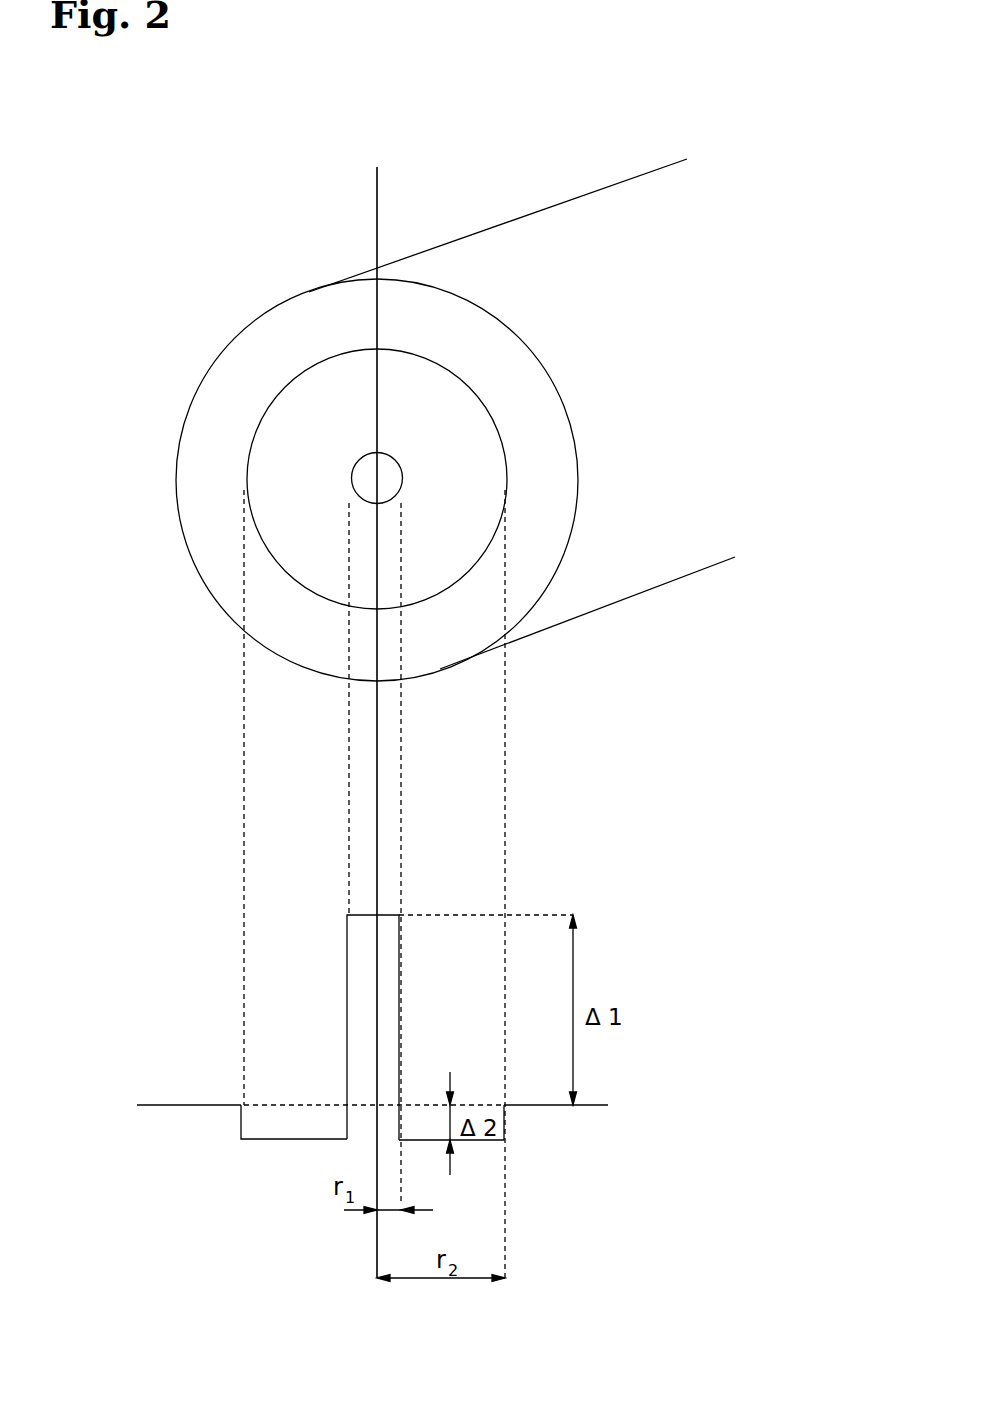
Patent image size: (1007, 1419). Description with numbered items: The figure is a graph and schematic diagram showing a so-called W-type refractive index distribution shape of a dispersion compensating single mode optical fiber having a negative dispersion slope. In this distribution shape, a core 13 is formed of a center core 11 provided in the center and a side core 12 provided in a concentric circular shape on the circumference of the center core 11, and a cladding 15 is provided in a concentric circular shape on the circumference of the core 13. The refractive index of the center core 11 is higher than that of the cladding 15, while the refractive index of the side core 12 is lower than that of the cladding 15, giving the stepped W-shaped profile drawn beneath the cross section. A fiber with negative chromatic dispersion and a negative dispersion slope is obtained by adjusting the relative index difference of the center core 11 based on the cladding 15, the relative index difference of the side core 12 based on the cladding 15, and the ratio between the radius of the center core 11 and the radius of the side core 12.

The center core 11 is at (385, 468).
The side core 12 is at (457, 452).
The core 13 is at (592, 243).
The cladding 15 is at (527, 452).